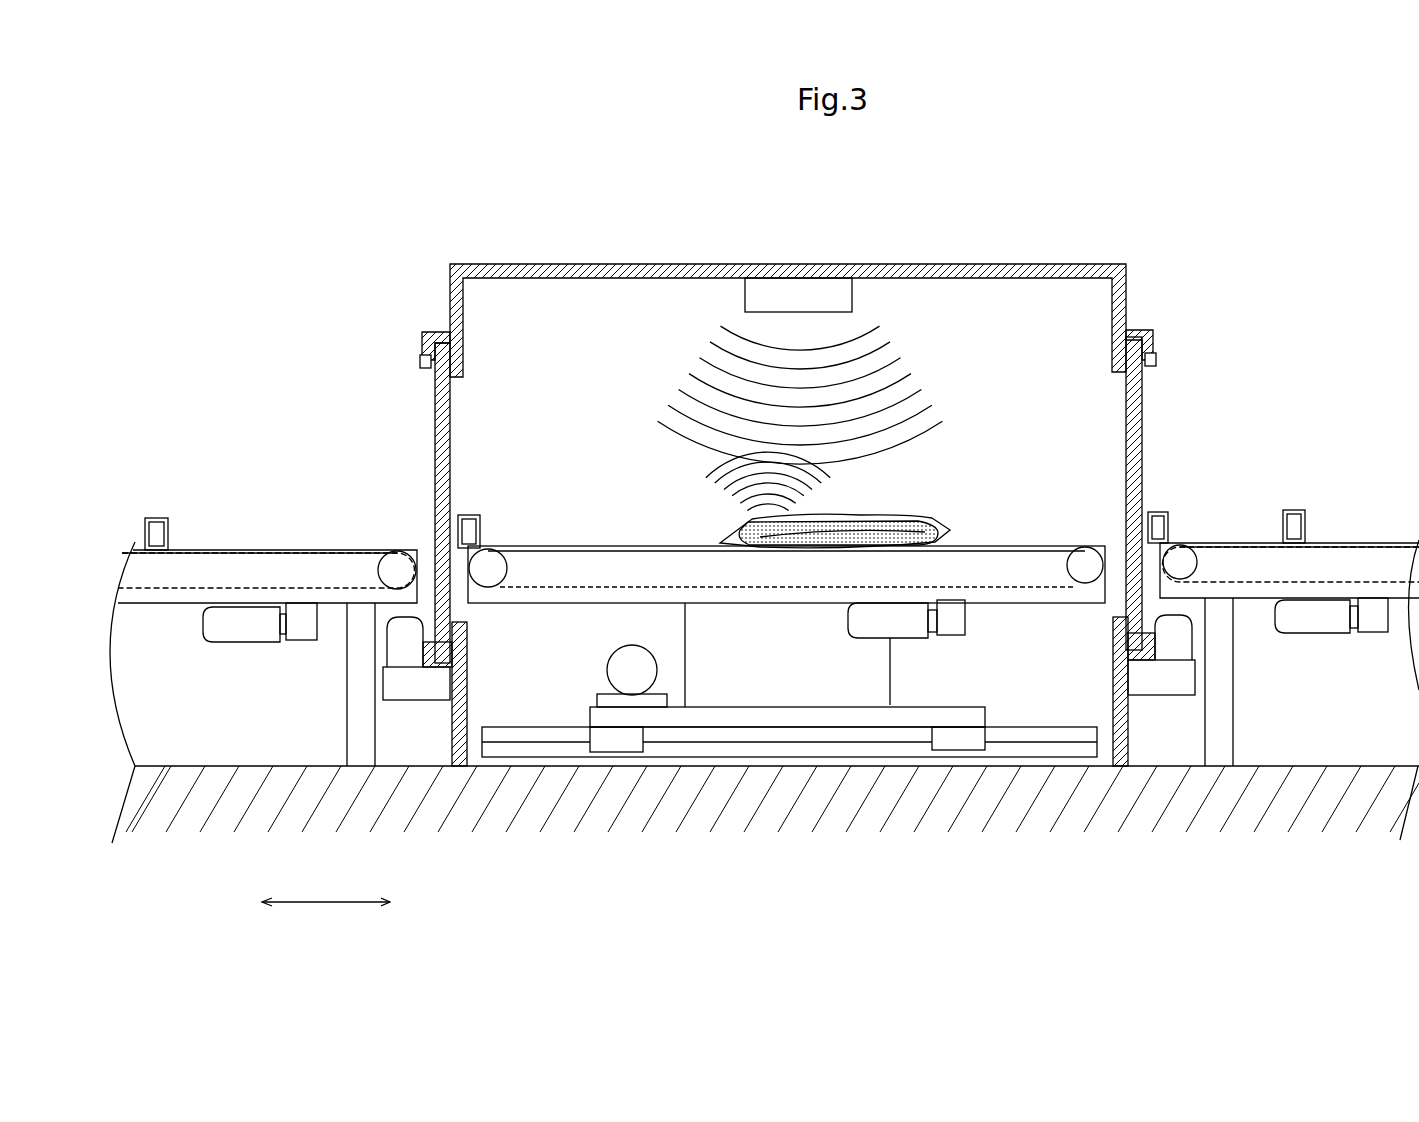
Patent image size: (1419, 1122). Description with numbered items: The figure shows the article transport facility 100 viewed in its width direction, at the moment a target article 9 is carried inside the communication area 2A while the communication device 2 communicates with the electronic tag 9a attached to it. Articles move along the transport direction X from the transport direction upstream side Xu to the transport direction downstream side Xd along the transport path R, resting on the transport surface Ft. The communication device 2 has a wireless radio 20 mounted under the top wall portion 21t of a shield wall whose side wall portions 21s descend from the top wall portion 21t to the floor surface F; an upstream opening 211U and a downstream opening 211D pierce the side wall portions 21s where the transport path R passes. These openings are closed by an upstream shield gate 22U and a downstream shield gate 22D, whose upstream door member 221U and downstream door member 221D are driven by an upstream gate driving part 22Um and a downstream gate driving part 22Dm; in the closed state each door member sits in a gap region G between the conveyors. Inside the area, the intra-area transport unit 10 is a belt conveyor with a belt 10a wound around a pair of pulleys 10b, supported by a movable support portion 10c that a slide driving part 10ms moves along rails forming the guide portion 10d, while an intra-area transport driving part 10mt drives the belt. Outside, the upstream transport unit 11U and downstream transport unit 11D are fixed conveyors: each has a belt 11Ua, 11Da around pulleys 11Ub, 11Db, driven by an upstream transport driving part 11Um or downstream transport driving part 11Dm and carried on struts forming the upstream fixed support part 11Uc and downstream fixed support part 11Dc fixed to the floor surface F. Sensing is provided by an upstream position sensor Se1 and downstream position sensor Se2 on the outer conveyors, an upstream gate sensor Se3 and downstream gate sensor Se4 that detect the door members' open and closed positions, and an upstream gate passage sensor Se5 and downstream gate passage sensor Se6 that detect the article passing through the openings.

The article transport facility 100 is at (222, 198).
The communication device 2 is at (540, 217).
The communication area 2A is at (1035, 300).
The top wall portion 21t is at (815, 264).
The side wall portions 21s is at (1163, 252).
The upstream opening 211U is at (465, 380).
The downstream opening 211D is at (1112, 370).
The upstream door member 221U is at (435, 430).
The downstream door member 221D is at (1142, 420).
The upstream shield gate 22U is at (340, 350).
The downstream shield gate 22D is at (1240, 338).
The upstream gate driving part 22Um is at (403, 667).
The downstream gate driving part 22Dm is at (1172, 660).
The wireless radio 20 is at (852, 300).
The target article 9 is at (935, 520).
The electronic tag 9a is at (738, 525).
The intra-area transport unit 10 is at (578, 392).
The belt 10a is at (555, 546).
The pulleys 10b is at (505, 570).
The movable support portion 10c is at (668, 610).
The slide driving part 10ms is at (660, 668).
The intra-area transport driving part 10mt is at (905, 640).
The guide portion 10d is at (1035, 727).
The gap region G is at (470, 620).
The transport path R is at (178, 318).
The upstream transport unit 11U is at (238, 445).
The belt 11Ua is at (280, 548).
The pulleys 11Ub is at (380, 560).
The upstream transport driving part 11Um is at (245, 642).
The upstream fixed support part 11Uc is at (345, 675).
The downstream transport unit 11D is at (1340, 412).
The belt 11Da is at (1258, 543).
The pulleys 11Db is at (1200, 568).
The downstream transport driving part 11Dm is at (1325, 633).
The downstream fixed support part 11Dc is at (1233, 705).
The transport surface Ft is at (238, 548).
The floor surface F is at (182, 766).
The upstream position sensor Se1 is at (155, 518).
The downstream position sensor Se2 is at (1300, 512).
The upstream gate sensor Se3 is at (420, 363).
The downstream gate sensor Se4 is at (1157, 360).
The upstream gate passage sensor Se5 is at (480, 520).
The downstream gate passage sensor Se6 is at (1160, 512).
The transport direction X is at (322, 893).
The transport direction upstream side Xu is at (247, 904).
The transport direction downstream side Xd is at (400, 904).